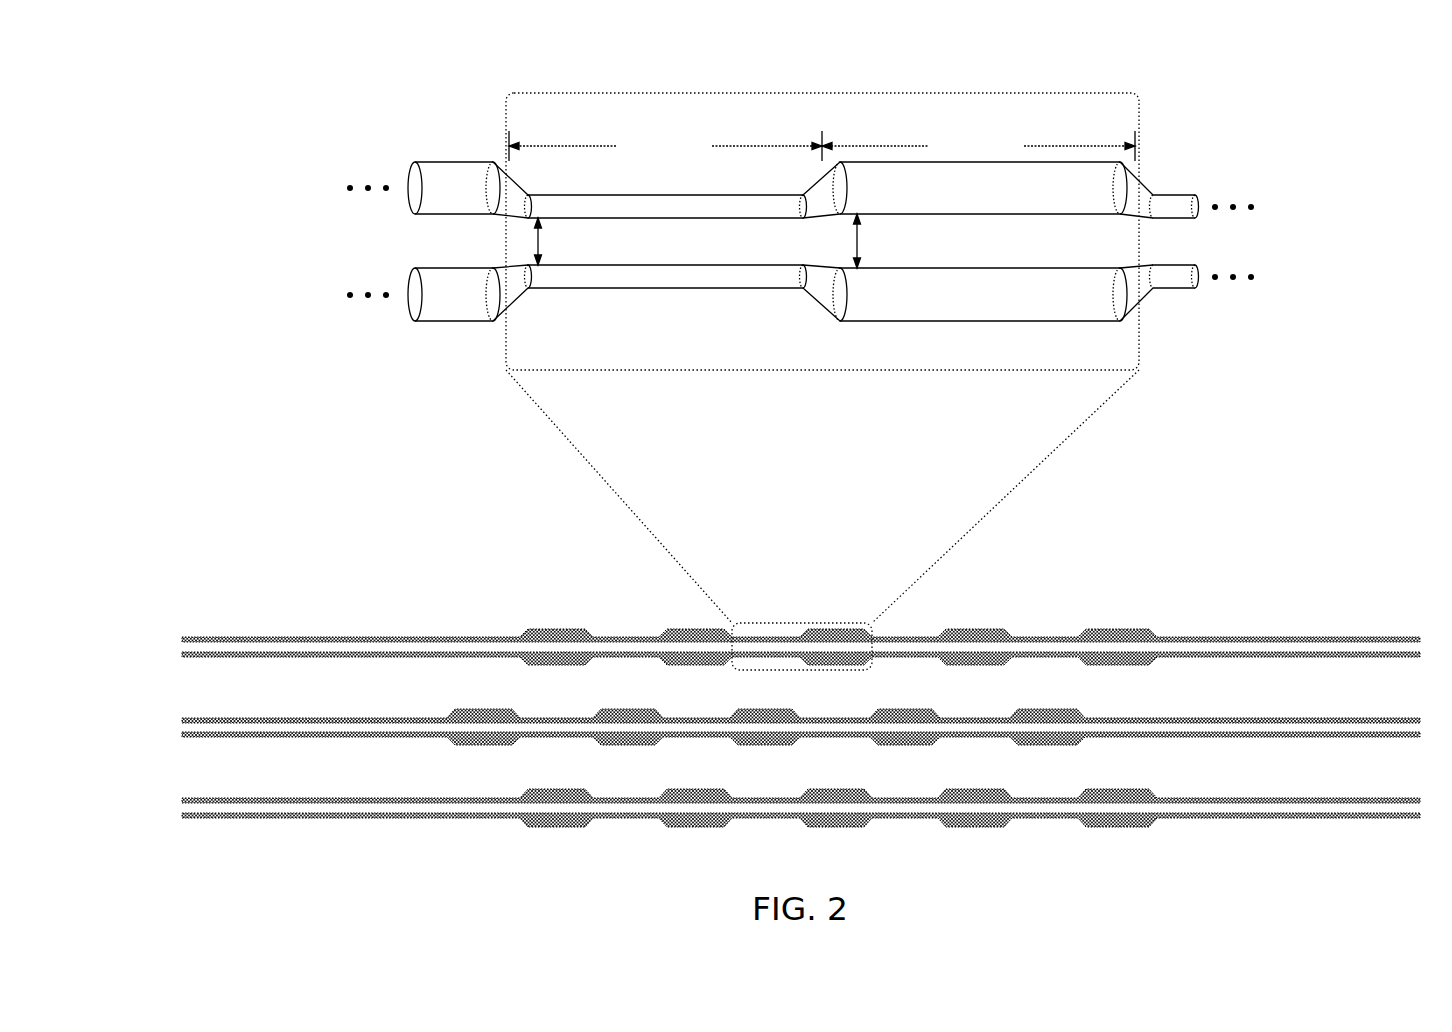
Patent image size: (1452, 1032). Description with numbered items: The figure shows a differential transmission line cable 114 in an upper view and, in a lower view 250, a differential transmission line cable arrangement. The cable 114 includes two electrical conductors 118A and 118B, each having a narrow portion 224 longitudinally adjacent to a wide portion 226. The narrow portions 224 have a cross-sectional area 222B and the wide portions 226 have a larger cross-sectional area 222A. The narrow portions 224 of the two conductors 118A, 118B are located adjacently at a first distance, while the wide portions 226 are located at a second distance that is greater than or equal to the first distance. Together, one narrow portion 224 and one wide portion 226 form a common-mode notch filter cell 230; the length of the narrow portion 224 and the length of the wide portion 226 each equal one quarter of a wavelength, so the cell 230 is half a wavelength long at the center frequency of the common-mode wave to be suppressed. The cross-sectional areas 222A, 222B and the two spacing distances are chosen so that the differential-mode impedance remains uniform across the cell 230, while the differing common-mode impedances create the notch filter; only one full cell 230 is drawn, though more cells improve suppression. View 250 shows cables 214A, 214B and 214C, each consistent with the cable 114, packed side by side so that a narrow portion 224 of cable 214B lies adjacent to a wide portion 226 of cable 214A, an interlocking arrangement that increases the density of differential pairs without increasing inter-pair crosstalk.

The differential transmission line cable 114 is at (224, 172).
The electrical conductor 118A is at (1270, 162).
The electrical conductor 118B is at (1270, 263).
The cross-sectional area 222A is at (408, 179).
The cross-sectional area 222B is at (537, 198).
The narrow portion 224 is at (606, 265).
The wide portion 226 is at (939, 267).
The cell 230 is at (968, 92).
The view 250 is at (224, 582).
The differential transmission line cable 214A is at (764, 647).
The differential transmission line cable 214B is at (764, 727).
The differential transmission line cable 214C is at (764, 808).